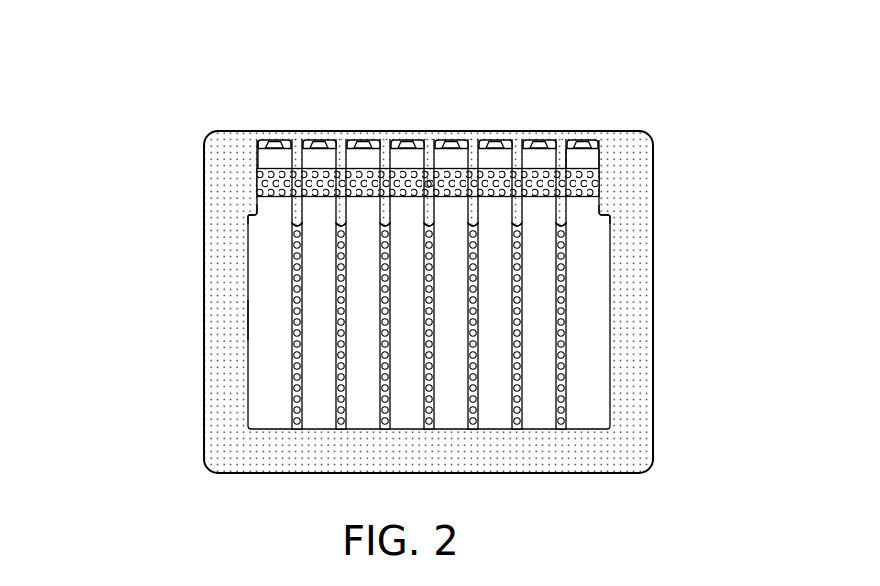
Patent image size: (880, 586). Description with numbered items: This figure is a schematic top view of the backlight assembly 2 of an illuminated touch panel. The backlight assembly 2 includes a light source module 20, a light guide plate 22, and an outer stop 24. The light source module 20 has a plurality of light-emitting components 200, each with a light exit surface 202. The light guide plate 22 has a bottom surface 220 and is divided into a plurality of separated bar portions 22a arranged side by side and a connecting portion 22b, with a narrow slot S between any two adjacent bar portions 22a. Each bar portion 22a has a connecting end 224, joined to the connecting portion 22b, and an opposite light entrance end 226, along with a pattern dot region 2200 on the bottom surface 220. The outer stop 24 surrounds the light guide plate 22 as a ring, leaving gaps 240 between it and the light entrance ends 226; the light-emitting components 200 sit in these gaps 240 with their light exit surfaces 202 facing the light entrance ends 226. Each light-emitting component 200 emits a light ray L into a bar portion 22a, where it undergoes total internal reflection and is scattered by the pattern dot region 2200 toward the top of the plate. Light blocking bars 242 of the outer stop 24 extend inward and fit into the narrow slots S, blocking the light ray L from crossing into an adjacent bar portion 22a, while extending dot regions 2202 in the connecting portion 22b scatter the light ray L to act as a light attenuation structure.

The backlight assembly 2 is at (385, 244).
The light source module 20 is at (342, 127).
The light-emitting component 200 is at (279, 141).
The light exit surface 202 is at (268, 144).
The light entrance end 226 is at (278, 181).
The connecting end 224 is at (276, 218).
The bar portion 22a is at (341, 205).
The light guide plate 22 is at (385, 296).
The connecting portion 22b is at (408, 326).
The outer stop 24 is at (217, 440).
The light ray L is at (279, 141).
The gap 240 is at (348, 127).
The narrow slot S is at (428, 168).
The pattern dot region 2200 is at (580, 173).
The light blocking bar 242 is at (561, 207).
The bottom surface 220 is at (597, 242).
The extending dot region 2202 is at (560, 340).